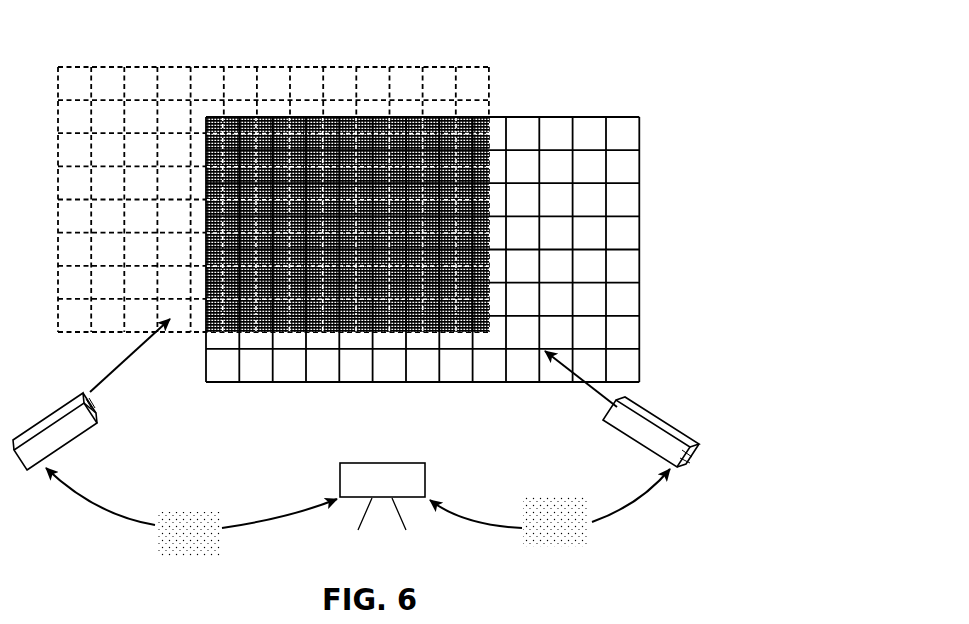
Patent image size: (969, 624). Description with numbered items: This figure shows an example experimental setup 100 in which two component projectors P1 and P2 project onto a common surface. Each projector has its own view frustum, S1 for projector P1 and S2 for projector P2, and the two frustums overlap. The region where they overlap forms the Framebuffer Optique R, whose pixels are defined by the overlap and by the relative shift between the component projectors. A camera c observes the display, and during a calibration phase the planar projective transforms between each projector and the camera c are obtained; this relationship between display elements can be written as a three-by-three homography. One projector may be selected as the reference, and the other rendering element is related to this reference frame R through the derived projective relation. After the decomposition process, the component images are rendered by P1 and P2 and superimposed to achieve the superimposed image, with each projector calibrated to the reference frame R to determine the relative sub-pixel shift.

The experimental setup 100 is at (412, 302).
The projector P1 is at (89, 394).
The projector P2 is at (618, 409).
The frustum S1 is at (173, 335).
The frustum S2 is at (642, 265).
The Framebuffer Optique R is at (212, 115).
The camera c is at (382, 496).